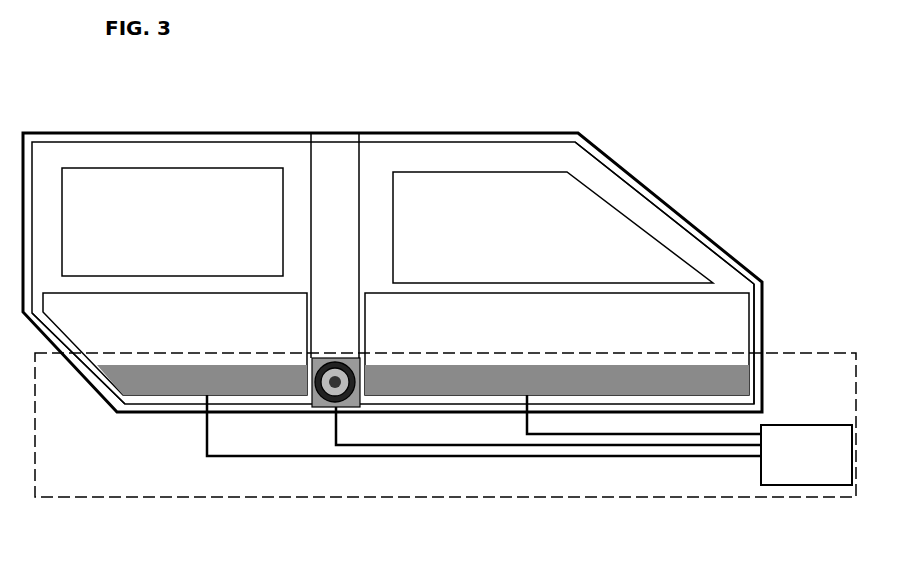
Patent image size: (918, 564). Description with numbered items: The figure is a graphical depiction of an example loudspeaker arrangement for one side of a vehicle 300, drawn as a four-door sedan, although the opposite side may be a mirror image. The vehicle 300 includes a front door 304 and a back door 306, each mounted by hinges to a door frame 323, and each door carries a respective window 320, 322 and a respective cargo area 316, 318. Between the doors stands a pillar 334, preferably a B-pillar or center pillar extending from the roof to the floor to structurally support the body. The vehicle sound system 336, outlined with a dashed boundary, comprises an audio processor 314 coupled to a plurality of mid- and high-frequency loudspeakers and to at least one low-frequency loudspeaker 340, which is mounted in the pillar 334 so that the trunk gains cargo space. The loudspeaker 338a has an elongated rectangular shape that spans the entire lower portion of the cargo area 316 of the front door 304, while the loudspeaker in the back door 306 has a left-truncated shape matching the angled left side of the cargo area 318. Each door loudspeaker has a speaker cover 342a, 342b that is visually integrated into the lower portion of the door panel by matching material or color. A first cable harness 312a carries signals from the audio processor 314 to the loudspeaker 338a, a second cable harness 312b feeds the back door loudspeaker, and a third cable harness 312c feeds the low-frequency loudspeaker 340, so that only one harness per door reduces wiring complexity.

The vehicle 300 is at (666, 86).
The front door 304 is at (557, 243).
The back door 306 is at (175, 247).
The first cable harness 312a is at (568, 434).
The second cable harness 312b is at (228, 456).
The third cable harness 312c is at (383, 445).
The audio processor 314 is at (788, 486).
The cargo area 316 is at (735, 330).
The cargo area 318 is at (97, 339).
The window 320 is at (610, 205).
The window 322 is at (81, 168).
The door frame 323 is at (712, 238).
The pillar 334 is at (337, 143).
The vehicle sound system 336 is at (163, 497).
The loudspeaker 338a is at (440, 365).
The low-frequency loudspeaker 340 is at (312, 362).
The speaker cover 342a is at (735, 388).
The speaker cover 342b is at (148, 388).